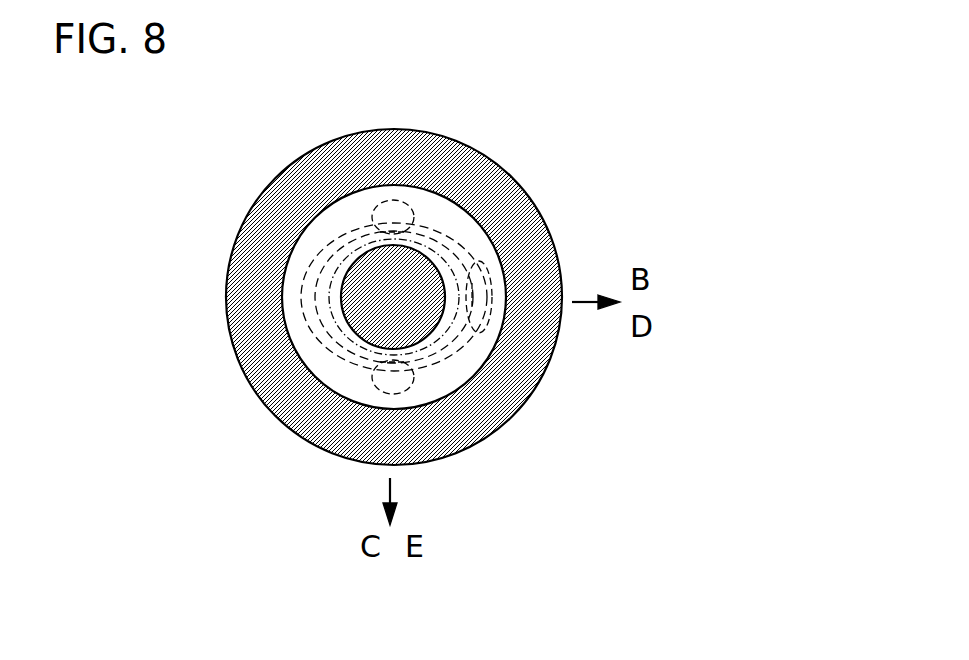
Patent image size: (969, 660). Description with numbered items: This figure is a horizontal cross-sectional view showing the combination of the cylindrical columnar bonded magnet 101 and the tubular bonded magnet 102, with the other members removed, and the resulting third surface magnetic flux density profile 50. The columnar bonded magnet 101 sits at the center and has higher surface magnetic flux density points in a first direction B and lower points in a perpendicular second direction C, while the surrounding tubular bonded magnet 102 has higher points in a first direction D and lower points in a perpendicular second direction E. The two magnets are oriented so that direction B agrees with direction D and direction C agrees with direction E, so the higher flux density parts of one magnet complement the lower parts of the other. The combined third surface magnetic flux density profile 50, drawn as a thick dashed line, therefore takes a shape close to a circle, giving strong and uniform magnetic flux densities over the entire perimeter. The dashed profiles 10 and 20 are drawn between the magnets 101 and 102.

The cylindrical columnar bonded magnet 101 is at (367, 282).
The tubular bonded magnet 102 is at (460, 163).
The flexible tube 10 is at (485, 328).
The third surface magnetic flux density profile 50 is at (458, 236).
The inner sheath 20 is at (440, 343).